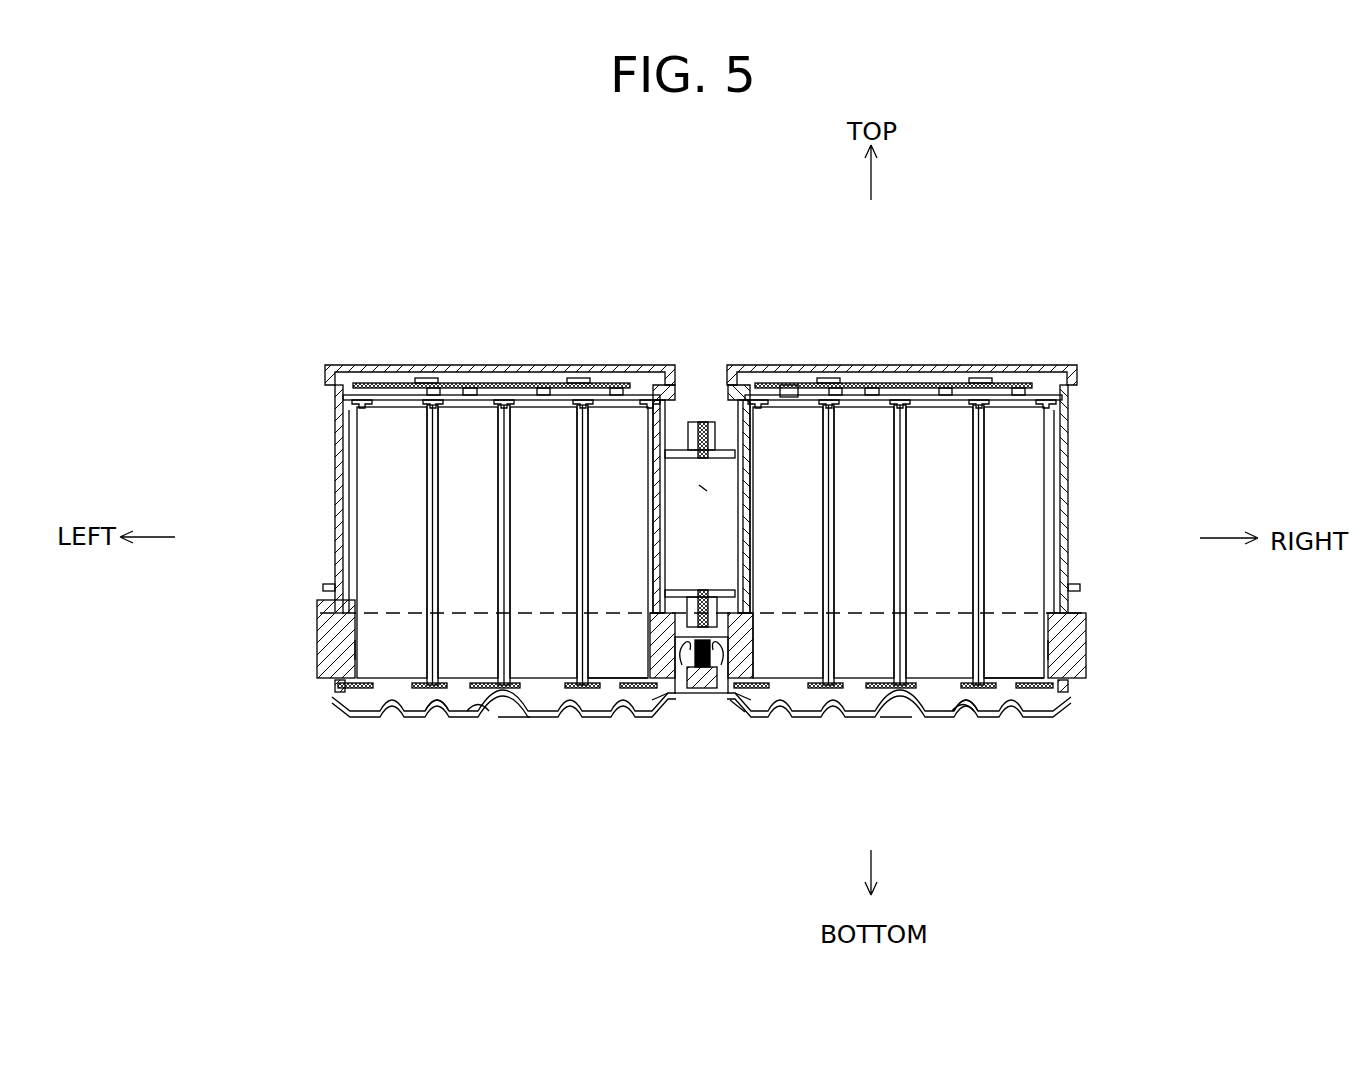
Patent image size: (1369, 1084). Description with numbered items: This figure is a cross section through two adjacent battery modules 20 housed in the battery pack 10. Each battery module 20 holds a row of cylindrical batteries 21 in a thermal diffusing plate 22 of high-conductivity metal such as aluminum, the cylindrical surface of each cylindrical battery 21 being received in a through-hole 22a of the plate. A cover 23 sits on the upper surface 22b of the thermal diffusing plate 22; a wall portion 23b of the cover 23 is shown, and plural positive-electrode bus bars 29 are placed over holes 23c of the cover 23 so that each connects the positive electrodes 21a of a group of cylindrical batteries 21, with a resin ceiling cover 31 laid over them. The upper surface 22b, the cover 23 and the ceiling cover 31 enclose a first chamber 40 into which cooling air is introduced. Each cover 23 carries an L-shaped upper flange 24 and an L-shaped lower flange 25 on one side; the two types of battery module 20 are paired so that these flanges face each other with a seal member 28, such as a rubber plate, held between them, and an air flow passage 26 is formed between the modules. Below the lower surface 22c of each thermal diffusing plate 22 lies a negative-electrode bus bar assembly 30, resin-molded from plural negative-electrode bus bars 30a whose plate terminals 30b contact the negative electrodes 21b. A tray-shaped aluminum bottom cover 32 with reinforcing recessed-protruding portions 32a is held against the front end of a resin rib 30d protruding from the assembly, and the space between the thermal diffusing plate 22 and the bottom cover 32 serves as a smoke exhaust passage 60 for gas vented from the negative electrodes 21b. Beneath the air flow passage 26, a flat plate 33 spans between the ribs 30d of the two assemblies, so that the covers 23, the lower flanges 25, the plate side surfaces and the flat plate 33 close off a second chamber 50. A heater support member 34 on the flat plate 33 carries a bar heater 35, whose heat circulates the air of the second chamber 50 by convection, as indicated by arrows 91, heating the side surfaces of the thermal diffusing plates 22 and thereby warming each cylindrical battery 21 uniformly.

The battery pack 10 is at (1110, 172).
The battery module 20 is at (307, 321).
The cylindrical battery 21 is at (380, 532).
The positive electrode 21a is at (557, 360).
The negative electrode 21b is at (592, 682).
The thermal diffusing plate 22 is at (320, 648).
The through-hole 22a is at (358, 648).
The upper surface 22b is at (330, 590).
The lower surface 22c is at (345, 690).
The cover 23 is at (322, 476).
The case lid 23b is at (335, 418).
The hole 23c is at (800, 388).
The upper flange 24 is at (684, 445).
The lower flange 25 is at (655, 578).
The air flow passage 26 is at (703, 488).
The seal member 28 is at (703, 420).
The positive-electrode bus bar 29 is at (497, 360).
The negative-electrode bus bar assembly 30 is at (348, 714).
The negative-electrode bus bar 30a is at (477, 705).
The plate terminal 30b is at (736, 702).
The resin rib 30d is at (660, 693).
The ceiling cover 31 is at (401, 362).
The bottom cover 32 is at (552, 712).
The reinforcing recessed-protruding portion 32a is at (520, 718).
The flat plate 33 is at (702, 695).
The heater support member 34 is at (690, 668).
The bar heater 35 is at (712, 657).
The first chamber 40 is at (334, 497).
The second chamber 50 is at (742, 632).
The smoke exhaust passage 60 is at (411, 709).
The arrows 91 is at (668, 705).